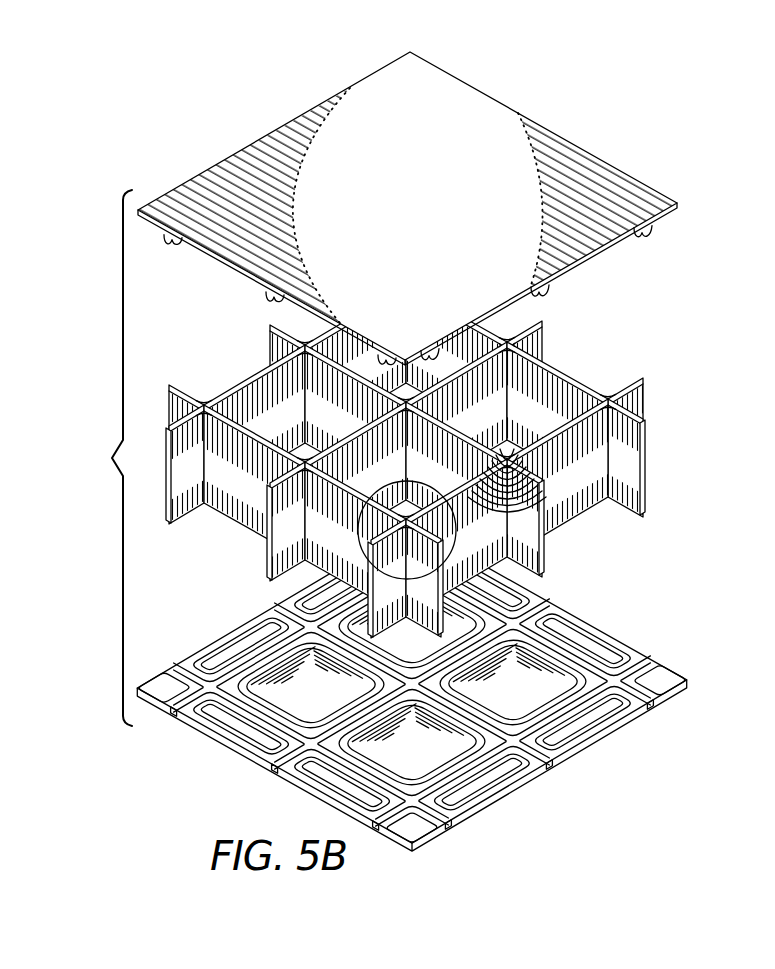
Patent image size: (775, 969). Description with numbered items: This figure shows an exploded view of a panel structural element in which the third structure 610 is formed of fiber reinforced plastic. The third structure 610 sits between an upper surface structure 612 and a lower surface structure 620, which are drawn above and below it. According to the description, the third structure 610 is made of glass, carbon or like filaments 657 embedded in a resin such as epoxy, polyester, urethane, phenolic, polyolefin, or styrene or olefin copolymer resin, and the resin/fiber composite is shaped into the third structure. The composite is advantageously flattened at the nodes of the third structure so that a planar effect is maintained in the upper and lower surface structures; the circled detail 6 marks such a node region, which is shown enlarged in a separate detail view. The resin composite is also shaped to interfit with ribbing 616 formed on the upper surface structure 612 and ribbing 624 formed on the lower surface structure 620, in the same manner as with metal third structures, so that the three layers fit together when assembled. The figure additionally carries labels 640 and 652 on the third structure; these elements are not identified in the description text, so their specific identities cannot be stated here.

The third structure 610 is at (434, 451).
The upper surface structure 612 is at (407, 208).
The ribbing 616 is at (270, 294).
The lower surface structure 620 is at (505, 793).
The ribbing 624 is at (543, 720).
The grid structure 640 is at (461, 451).
The grid node 652 is at (505, 343).
The filaments 657 is at (548, 512).
The detail circle for FIG. 6 is at (448, 574).